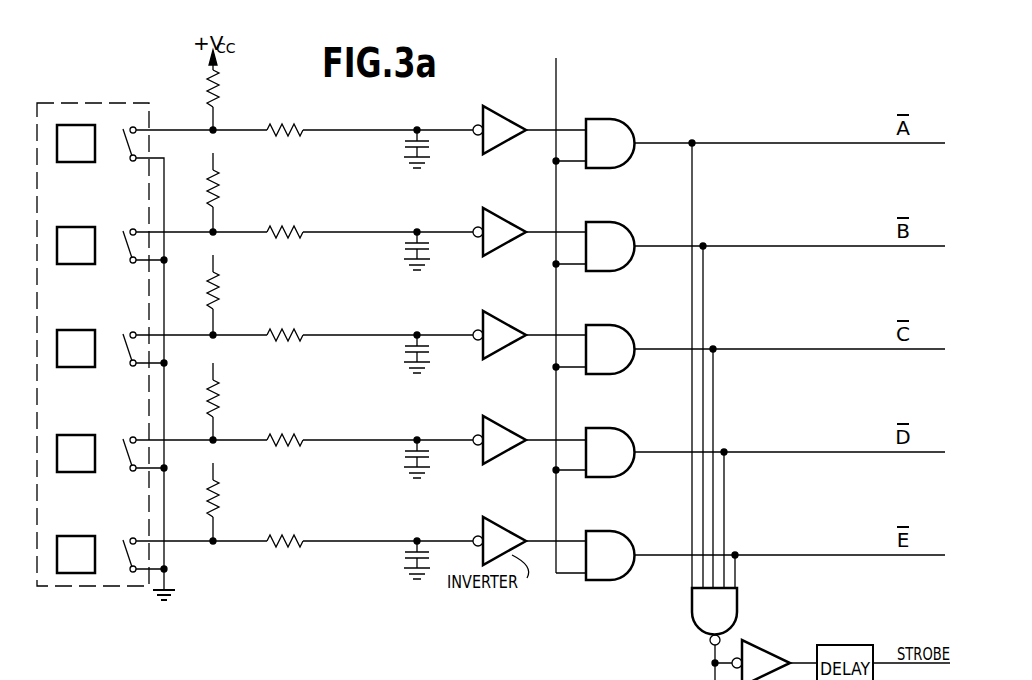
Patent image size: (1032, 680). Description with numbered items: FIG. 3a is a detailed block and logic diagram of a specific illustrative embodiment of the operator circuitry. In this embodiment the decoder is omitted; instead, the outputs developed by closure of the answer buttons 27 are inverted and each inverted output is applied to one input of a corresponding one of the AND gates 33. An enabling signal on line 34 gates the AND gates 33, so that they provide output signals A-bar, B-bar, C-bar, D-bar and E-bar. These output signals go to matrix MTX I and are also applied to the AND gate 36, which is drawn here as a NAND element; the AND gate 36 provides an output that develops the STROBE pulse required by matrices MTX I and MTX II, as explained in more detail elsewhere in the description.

The answer buttons 27 is at (95, 92).
The line 34 is at (565, 50).
The AND gates 33 is at (627, 122).
The AND gate 36 is at (692, 630).